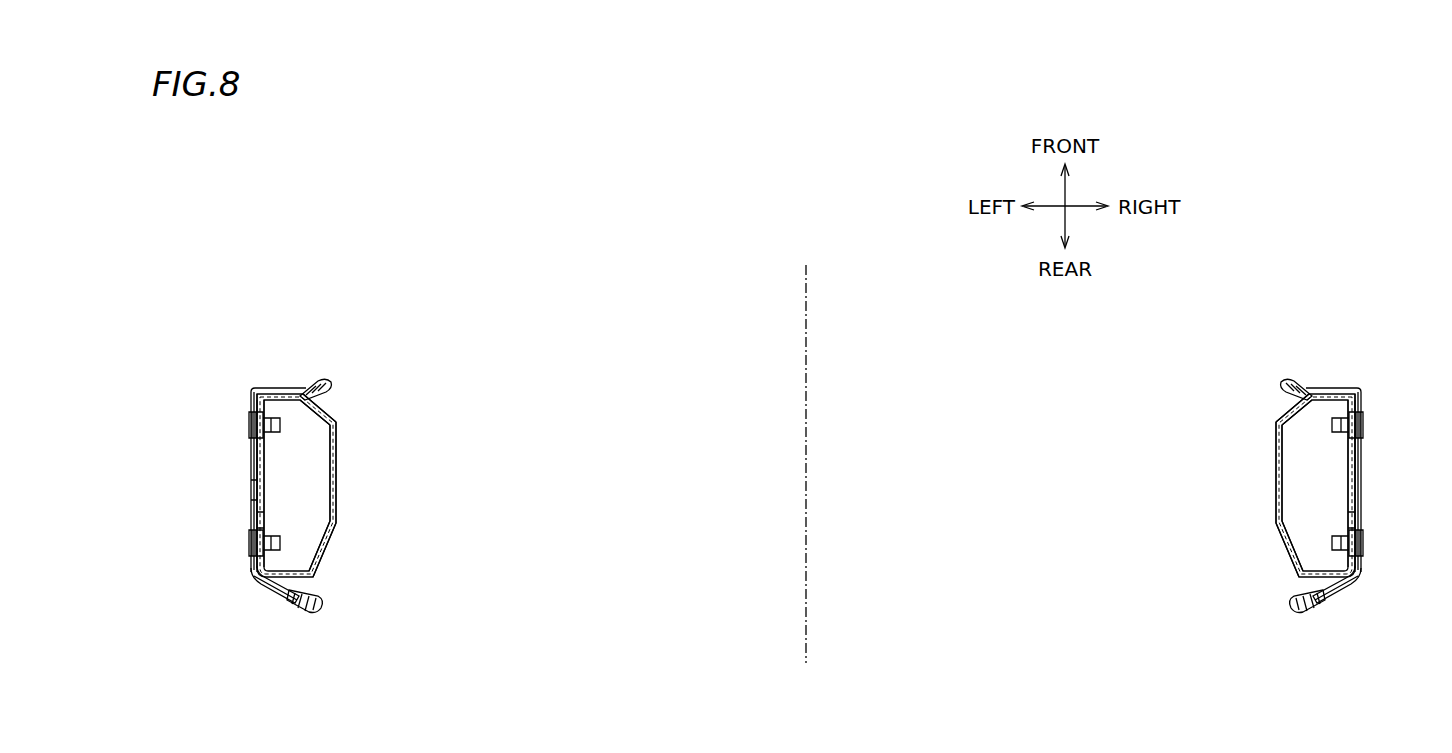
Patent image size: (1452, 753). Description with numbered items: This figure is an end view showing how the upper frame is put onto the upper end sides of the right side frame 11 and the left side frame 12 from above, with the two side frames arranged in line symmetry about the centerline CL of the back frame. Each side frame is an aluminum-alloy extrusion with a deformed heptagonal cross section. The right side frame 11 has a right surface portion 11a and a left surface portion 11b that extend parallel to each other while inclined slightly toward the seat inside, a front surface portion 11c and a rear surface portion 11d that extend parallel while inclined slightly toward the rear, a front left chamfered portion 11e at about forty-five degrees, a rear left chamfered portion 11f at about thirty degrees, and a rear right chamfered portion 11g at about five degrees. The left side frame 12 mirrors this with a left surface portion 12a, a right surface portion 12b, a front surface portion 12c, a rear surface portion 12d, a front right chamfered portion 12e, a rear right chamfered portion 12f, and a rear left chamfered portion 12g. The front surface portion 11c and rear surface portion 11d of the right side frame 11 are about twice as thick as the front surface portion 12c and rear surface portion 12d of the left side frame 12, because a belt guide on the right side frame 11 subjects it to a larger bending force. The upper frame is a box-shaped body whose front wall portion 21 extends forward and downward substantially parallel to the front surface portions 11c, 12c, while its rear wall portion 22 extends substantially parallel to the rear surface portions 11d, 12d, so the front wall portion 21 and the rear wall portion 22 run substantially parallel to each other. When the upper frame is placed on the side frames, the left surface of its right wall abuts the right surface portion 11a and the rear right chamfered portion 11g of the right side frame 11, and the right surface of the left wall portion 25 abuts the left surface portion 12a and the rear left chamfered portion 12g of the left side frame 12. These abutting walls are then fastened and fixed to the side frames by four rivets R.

The right side frame 11 is at (1277, 443).
The right surface portion 11a is at (1358, 468).
The left surface portion 11b is at (1277, 470).
The front surface portion 11c is at (1308, 390).
The rear surface portion 11d is at (1333, 577).
The front left chamfered portion 11e is at (1287, 410).
The rear left chamfered portion 11f is at (1287, 553).
The rear right chamfered portion 11g is at (817, 490).
The left side frame 12 is at (337, 443).
The left surface portion 12a is at (255, 468).
The right surface portion 12b is at (338, 470).
The front surface portion 12c is at (303, 400).
The rear surface portion 12d is at (285, 578).
The front right chamfered portion 12e is at (327, 410).
The rear right chamfered portion 12f is at (322, 553).
The rear left chamfered portion 12g is at (255, 520).
The front wall portion 21 is at (283, 387).
The rear wall portion 22 is at (1348, 588).
The left wall portion 25 is at (253, 483).
The rivet R is at (250, 425).
The centerline CL is at (806, 310).